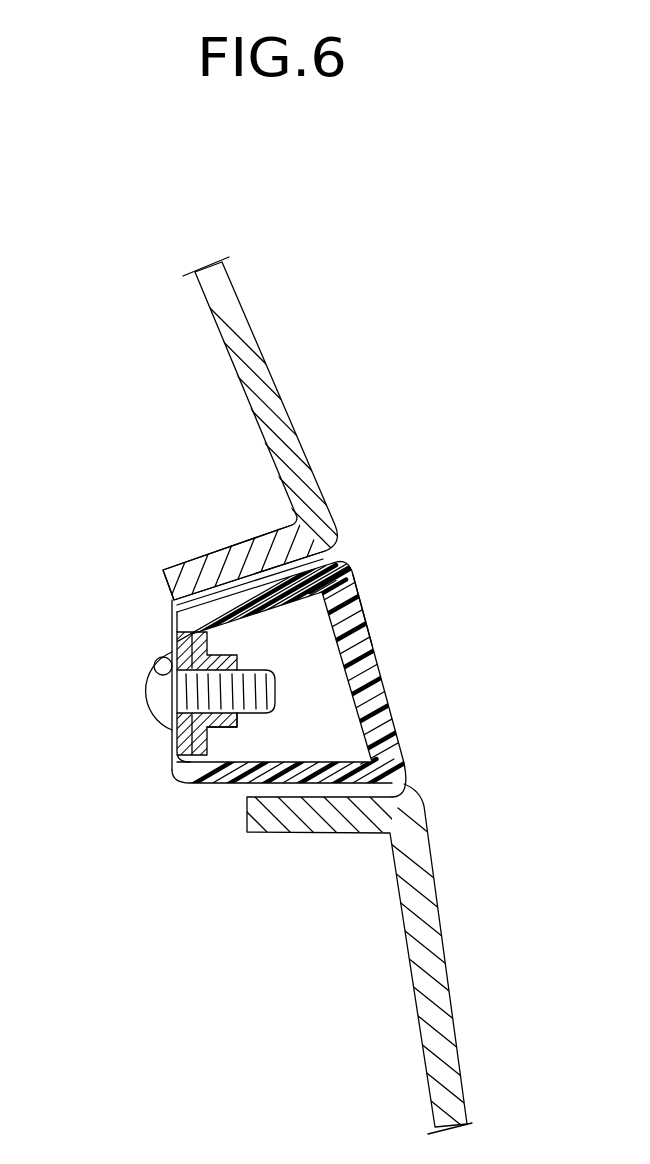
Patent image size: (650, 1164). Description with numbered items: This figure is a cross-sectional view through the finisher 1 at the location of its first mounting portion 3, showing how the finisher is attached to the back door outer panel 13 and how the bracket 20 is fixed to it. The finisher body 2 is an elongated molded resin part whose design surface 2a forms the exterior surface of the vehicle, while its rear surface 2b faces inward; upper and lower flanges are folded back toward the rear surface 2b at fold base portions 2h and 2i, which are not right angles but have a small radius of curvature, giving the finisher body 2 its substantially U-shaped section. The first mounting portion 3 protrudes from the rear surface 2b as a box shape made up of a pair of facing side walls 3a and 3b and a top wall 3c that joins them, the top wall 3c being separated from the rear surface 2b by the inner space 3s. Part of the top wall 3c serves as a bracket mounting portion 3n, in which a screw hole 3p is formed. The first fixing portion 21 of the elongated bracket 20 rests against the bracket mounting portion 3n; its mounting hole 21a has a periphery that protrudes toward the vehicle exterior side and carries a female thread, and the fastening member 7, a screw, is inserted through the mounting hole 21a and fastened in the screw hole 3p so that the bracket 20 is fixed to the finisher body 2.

The finisher 1 is at (418, 527).
The finisher body 2 is at (390, 592).
The design surface 2a is at (370, 637).
The rear surface 2b is at (390, 690).
The fold base portion 2h is at (333, 552).
The fold base portion 2i is at (395, 783).
The first mounting portion 3 is at (175, 790).
The side wall 3a is at (192, 630).
The side wall 3b is at (323, 790).
The top wall 3c is at (176, 770).
The bracket mounting portion 3n is at (170, 588).
The screw hole 3p is at (156, 658).
The inner space 3s is at (303, 661).
The fastening member 7 is at (147, 690).
The back door outer panel 13 is at (287, 438).
The bracket 20 is at (226, 752).
The first fixing portion 21 is at (173, 747).
The mounting hole 21a is at (258, 795).